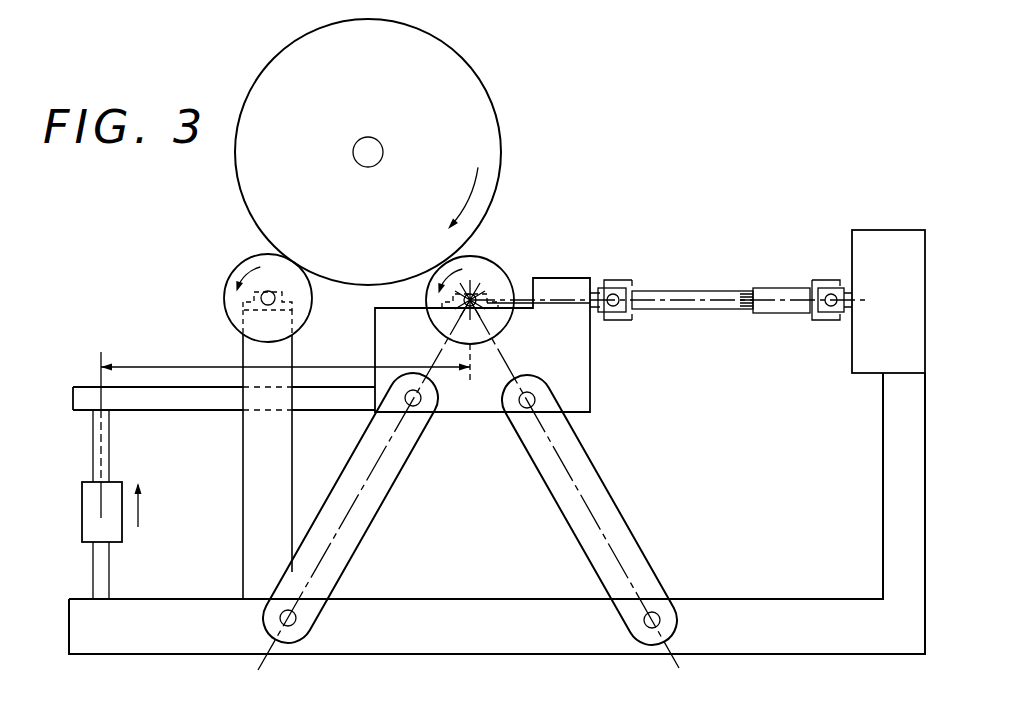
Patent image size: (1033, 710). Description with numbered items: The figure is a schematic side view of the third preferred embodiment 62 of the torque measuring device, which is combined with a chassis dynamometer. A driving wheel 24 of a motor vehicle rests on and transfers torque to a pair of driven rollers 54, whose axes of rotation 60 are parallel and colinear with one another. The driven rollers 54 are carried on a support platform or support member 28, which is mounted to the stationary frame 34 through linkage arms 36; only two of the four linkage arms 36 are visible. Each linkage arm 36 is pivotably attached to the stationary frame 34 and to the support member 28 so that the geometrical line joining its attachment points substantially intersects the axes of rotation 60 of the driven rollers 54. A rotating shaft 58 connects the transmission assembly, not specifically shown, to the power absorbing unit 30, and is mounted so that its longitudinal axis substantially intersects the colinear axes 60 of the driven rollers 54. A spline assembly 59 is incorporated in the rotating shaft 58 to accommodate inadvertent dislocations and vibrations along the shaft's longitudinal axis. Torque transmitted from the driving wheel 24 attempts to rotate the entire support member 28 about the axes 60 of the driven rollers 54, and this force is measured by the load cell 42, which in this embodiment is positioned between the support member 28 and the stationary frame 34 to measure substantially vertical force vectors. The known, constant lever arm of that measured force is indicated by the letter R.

The driving wheel 24 is at (475, 75).
The support member 28 is at (590, 368).
The power absorbing unit 30 is at (910, 231).
The stationary frame 34 is at (447, 641).
The linkage arms 36 is at (368, 516).
The load cell 42 is at (90, 520).
The driven rollers 54 is at (506, 282).
The rotating shaft 58 is at (680, 291).
The spline assembly 59 is at (748, 289).
The axes of rotation 60 is at (478, 292).
The third preferred embodiment 62 is at (147, 347).